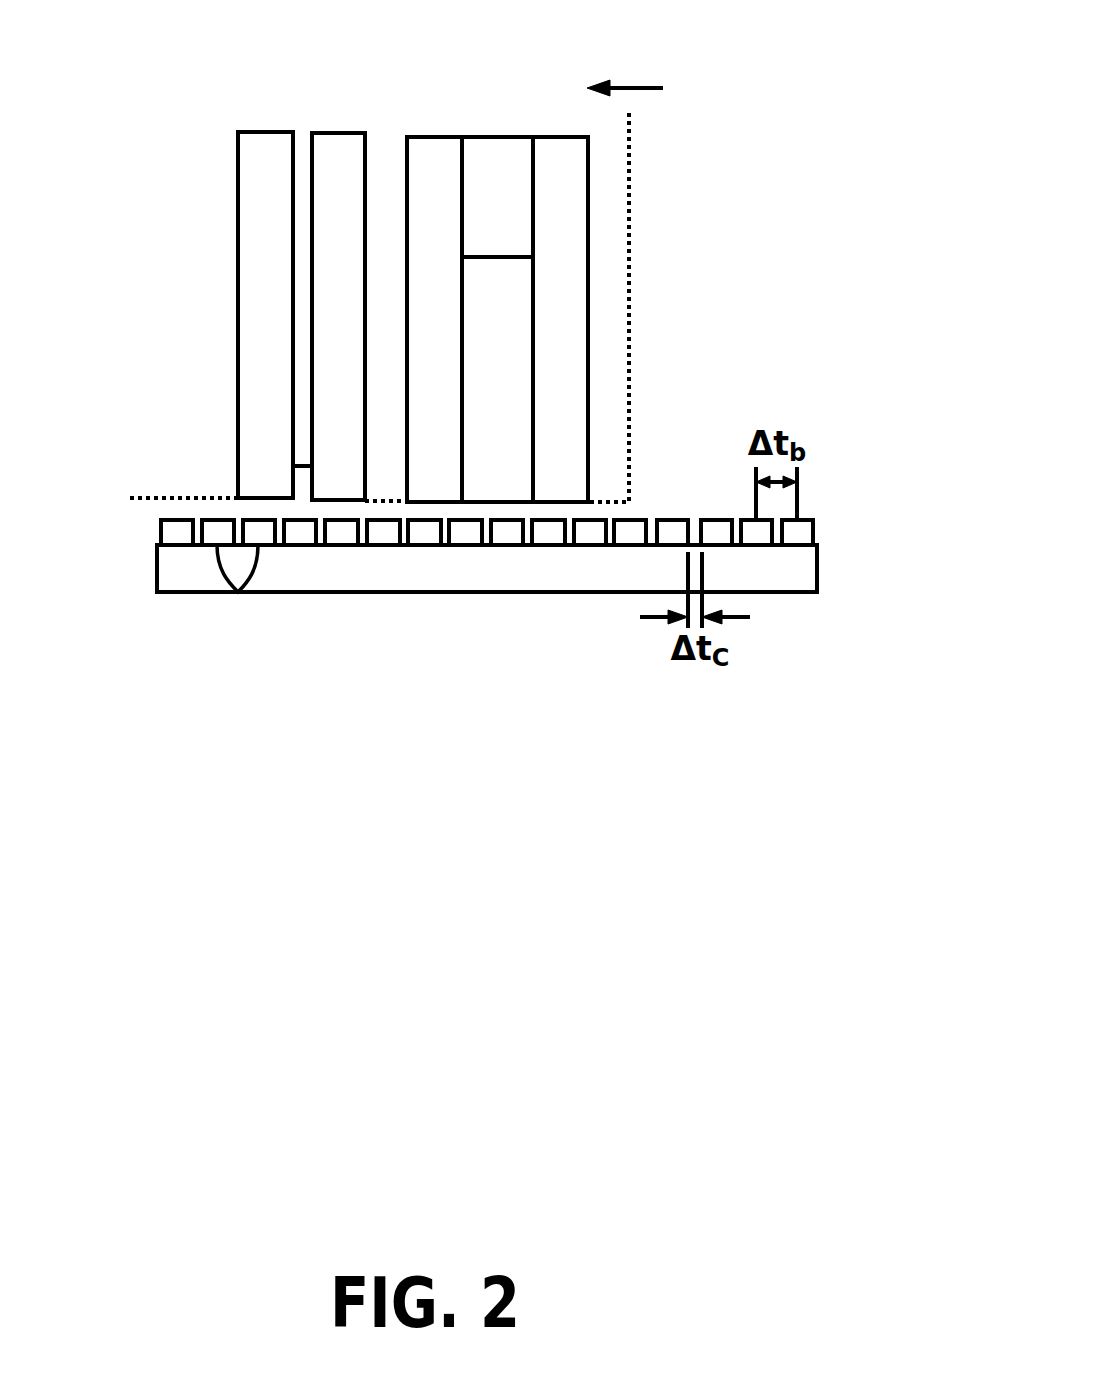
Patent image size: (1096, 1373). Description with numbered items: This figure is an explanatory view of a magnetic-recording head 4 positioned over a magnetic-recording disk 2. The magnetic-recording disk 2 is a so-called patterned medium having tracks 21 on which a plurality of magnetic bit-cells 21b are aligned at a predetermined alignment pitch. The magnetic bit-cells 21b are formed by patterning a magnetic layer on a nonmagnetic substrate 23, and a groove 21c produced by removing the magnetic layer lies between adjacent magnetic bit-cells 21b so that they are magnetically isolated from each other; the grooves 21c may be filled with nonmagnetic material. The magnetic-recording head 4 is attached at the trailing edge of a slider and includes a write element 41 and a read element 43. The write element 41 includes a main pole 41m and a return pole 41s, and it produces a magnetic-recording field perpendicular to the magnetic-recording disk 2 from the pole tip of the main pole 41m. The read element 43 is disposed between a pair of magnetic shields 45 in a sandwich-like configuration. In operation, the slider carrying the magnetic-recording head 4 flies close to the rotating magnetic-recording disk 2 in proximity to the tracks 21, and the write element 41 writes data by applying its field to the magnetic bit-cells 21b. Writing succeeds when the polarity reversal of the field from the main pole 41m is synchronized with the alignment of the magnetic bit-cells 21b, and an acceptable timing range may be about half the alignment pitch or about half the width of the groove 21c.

The magnetic-recording disk 2 is at (477, 537).
The magnetic-recording head 4 is at (632, 155).
The tracks 21 is at (150, 527).
The magnetic bit-cells 21b is at (238, 592).
The groove 21c is at (693, 518).
The nonmagnetic substrate 23 is at (172, 568).
The write element 41 is at (515, 118).
The main pole 41m is at (565, 358).
The return pole 41s is at (433, 137).
The read element 43 is at (300, 483).
The magnetic shields 45 is at (335, 133).